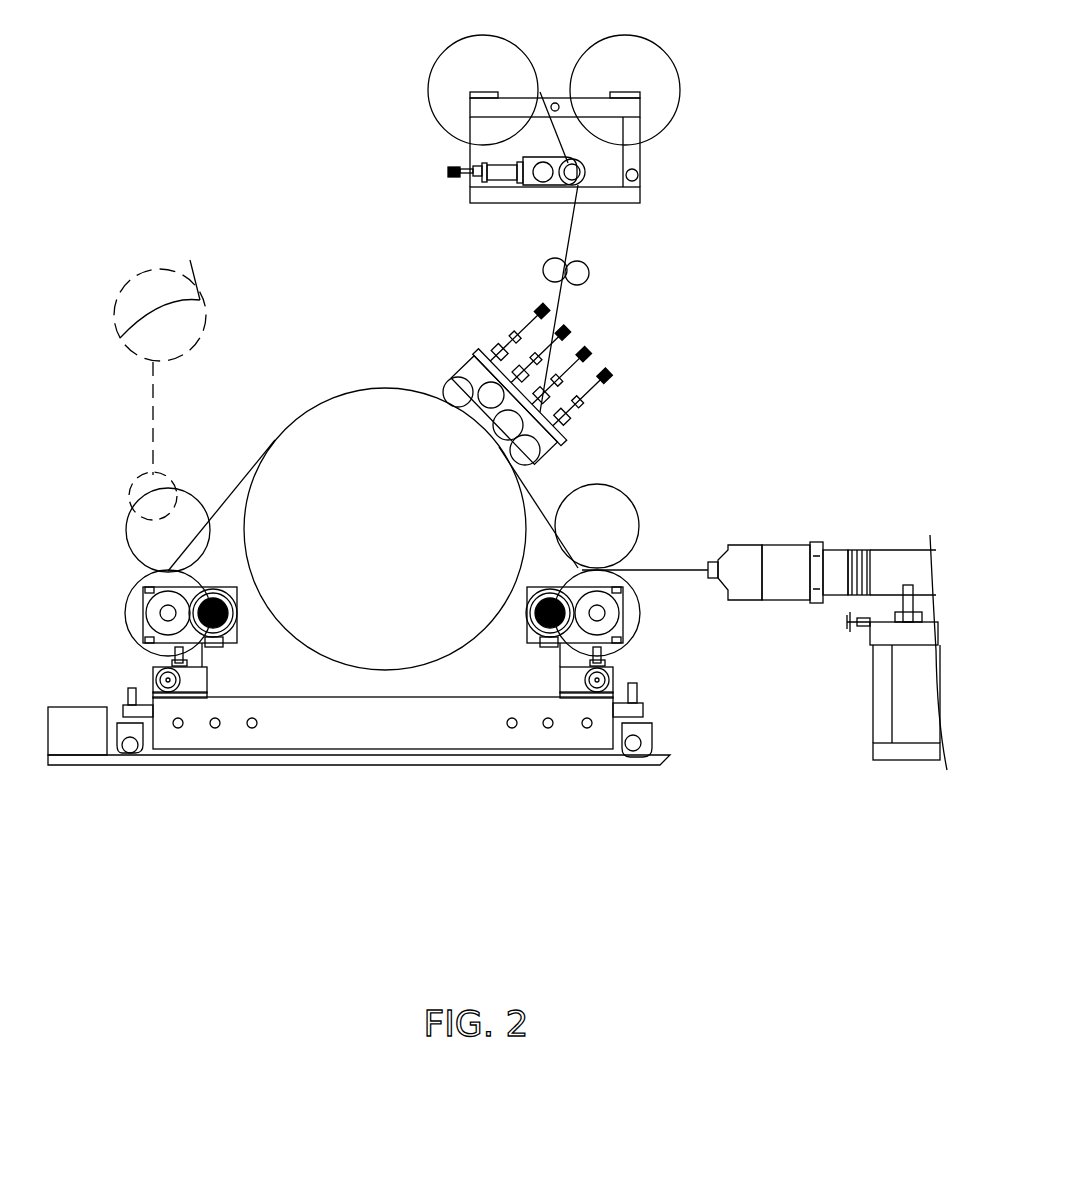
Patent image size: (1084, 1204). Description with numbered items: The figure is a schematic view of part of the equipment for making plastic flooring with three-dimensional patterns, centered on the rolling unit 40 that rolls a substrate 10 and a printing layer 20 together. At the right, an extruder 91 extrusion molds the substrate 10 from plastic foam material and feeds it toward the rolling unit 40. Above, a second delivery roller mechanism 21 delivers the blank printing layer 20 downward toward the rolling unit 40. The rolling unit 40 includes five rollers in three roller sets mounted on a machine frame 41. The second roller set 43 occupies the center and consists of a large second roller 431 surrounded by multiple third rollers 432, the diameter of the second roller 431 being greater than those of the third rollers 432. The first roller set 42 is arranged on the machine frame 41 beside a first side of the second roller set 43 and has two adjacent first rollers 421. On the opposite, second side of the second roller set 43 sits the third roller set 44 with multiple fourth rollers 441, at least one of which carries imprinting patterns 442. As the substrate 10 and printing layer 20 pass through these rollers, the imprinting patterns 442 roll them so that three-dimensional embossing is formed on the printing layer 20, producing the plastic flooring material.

The substrate 10 is at (680, 577).
The printing layer 20 is at (575, 237).
The second delivery roller mechanism 21 is at (668, 212).
The rolling unit 40 is at (267, 215).
The machine frame 41 is at (377, 730).
The first roller set 42 is at (657, 526).
The first roller 421 is at (623, 507).
The second roller set 43 is at (391, 363).
The second roller 431 is at (445, 655).
The third roller 432 is at (527, 473).
The third roller set 44 is at (84, 538).
The fourth roller 441 is at (183, 493).
The imprinting patterns 442 is at (174, 300).
The extruder 91 is at (783, 550).